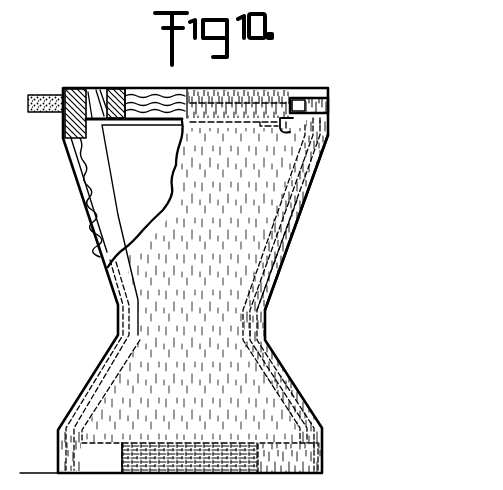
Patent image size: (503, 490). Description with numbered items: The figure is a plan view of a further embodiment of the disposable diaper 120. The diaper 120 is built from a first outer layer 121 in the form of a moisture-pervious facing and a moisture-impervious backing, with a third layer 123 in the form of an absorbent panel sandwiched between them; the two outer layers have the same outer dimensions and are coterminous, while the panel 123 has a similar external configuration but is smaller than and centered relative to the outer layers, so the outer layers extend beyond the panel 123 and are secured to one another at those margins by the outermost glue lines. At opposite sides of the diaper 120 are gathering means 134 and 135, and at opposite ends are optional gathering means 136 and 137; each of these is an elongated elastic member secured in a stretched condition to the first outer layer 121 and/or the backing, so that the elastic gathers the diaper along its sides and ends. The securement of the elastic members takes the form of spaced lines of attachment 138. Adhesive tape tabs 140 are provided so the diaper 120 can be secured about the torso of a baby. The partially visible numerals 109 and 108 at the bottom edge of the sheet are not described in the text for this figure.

The disposable diaper 120 is at (98, 257).
The first outer layer 121 is at (272, 193).
The third layer 123 is at (115, 133).
The gathering means 134 is at (92, 220).
The gathering means 135 is at (296, 228).
The gathering means 136 is at (290, 132).
The gathering means 137 is at (268, 442).
The lines of attachment 138 is at (90, 178).
The adhesive tape tabs 140 is at (42, 97).
The base 109 is at (30, 481).
The base support 108 is at (78, 481).